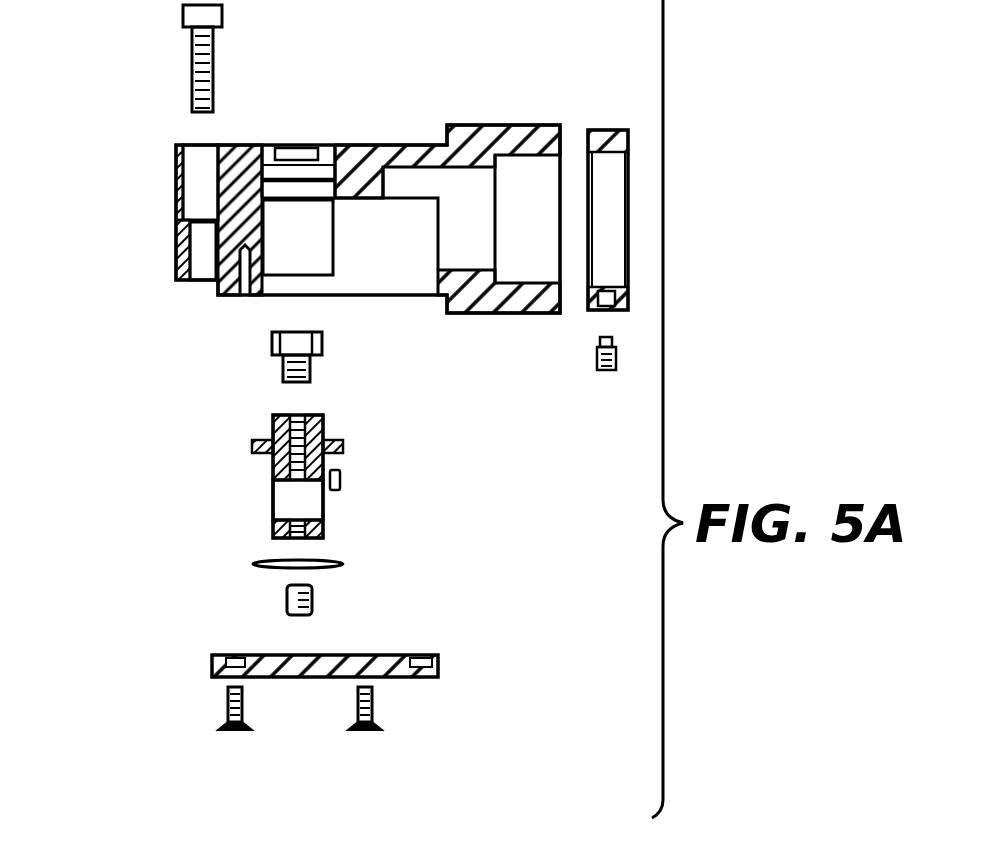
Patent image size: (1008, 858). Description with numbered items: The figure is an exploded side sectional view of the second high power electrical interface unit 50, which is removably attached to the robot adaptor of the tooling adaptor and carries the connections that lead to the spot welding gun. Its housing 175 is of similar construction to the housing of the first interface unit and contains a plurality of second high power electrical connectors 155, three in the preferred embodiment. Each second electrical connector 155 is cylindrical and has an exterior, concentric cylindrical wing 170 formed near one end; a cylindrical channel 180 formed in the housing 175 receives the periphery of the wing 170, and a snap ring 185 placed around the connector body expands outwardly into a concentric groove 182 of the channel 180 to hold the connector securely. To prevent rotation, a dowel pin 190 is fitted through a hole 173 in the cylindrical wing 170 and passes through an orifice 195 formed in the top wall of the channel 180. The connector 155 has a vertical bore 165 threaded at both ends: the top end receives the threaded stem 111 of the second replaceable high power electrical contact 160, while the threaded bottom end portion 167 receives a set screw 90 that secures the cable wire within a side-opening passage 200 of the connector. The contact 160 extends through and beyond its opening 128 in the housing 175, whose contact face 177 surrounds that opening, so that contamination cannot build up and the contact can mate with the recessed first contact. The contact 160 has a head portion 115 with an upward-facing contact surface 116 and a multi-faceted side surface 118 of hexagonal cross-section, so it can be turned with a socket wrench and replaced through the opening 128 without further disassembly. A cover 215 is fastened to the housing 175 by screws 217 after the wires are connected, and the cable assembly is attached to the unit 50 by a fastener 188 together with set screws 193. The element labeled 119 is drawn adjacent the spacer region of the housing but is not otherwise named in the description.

The second high power electrical interface unit 50 is at (268, 483).
The set screw 90 is at (285, 605).
The threaded stem 111 is at (283, 371).
The head portion 115 is at (288, 332).
The contact surface 116 is at (318, 337).
The side surface 118 is at (192, 53).
The spacer 119 is at (202, 178).
The opening 128 is at (297, 120).
The second high power electrical connector 155 is at (275, 468).
The second replaceable high power electrical contact 160 is at (312, 348).
The vertical bore 165 is at (303, 415).
The threaded bottom end portion 167 is at (290, 538).
The cylindrical wing 170 is at (262, 452).
The hole 173 is at (340, 443).
The housing 175 is at (478, 158).
The contact face 177 is at (312, 173).
The cylindrical channel 180 is at (268, 163).
The concentric groove 182 is at (268, 182).
The snap ring 185 is at (325, 562).
The fastener 188 is at (605, 130).
The dowel pin 190 is at (342, 482).
The set screws 193 is at (616, 386).
The orifice 195 is at (330, 150).
The side-opening passage 200 is at (305, 500).
The cover 215 is at (393, 658).
The screws 217 is at (357, 712).